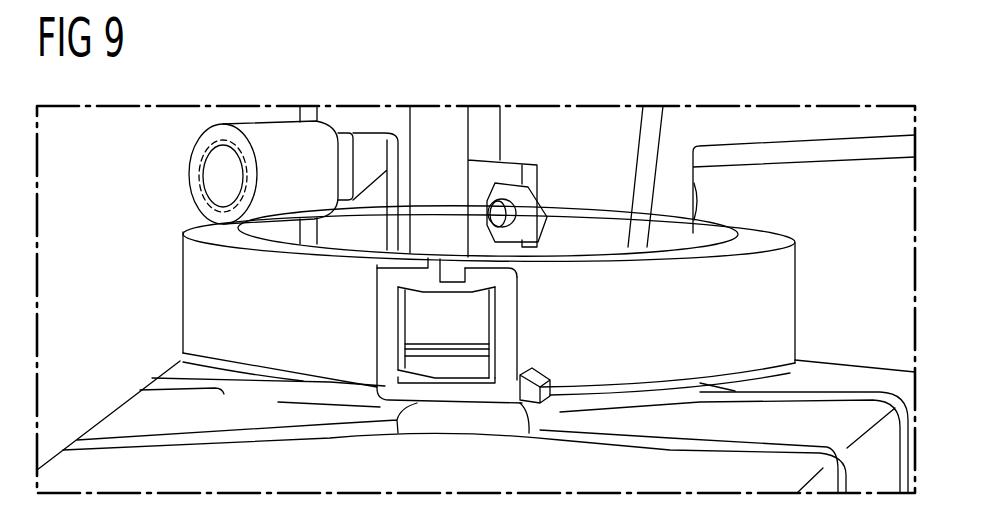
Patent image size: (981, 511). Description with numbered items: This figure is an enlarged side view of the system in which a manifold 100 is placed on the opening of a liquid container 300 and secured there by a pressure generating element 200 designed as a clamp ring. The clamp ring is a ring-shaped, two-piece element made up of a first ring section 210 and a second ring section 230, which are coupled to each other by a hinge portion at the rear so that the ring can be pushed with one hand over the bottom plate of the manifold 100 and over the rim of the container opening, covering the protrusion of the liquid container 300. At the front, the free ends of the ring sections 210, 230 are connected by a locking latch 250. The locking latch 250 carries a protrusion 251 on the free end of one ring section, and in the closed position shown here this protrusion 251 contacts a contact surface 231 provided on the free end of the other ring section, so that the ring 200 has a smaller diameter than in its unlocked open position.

The manifold 100 is at (607, 131).
The pressure generating element 200 is at (498, 299).
The first ring section 210 is at (183, 293).
The second ring section 230 is at (640, 310).
The contact surface 231 is at (524, 355).
The locking latch 250 is at (479, 371).
The protrusion 251 is at (527, 393).
The liquid container 300 is at (284, 436).